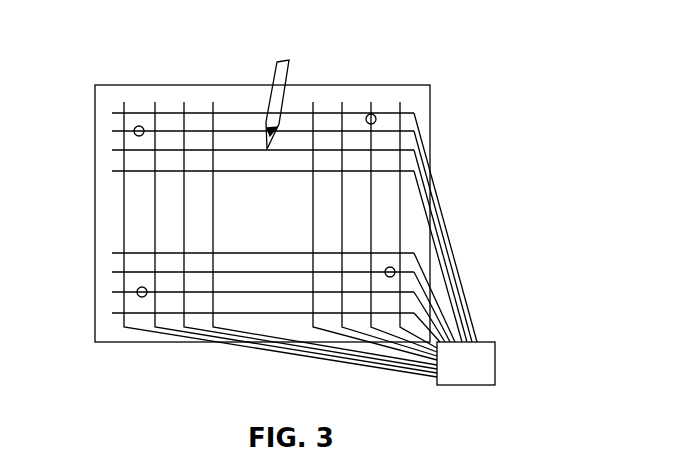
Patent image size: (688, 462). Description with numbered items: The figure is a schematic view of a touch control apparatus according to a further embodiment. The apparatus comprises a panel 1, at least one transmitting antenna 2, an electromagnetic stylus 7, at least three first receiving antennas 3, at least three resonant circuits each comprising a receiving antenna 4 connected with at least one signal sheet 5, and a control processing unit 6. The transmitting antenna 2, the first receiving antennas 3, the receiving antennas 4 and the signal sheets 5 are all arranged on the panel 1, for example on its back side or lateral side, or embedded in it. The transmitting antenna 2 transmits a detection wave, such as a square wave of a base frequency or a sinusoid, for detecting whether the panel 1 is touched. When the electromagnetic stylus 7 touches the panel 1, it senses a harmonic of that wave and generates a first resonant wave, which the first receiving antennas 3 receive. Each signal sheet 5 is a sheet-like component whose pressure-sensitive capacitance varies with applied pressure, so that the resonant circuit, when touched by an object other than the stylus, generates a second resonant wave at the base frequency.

The panel 1 is at (239, 213).
The transmitting antenna 2 is at (298, 213).
The first receiving antennas 3 is at (280, 252).
The receiving antenna 4 is at (466, 227).
The signal sheet 5 is at (246, 174).
The control processing unit 6 is at (486, 340).
The electromagnetic stylus 7 is at (309, 76).